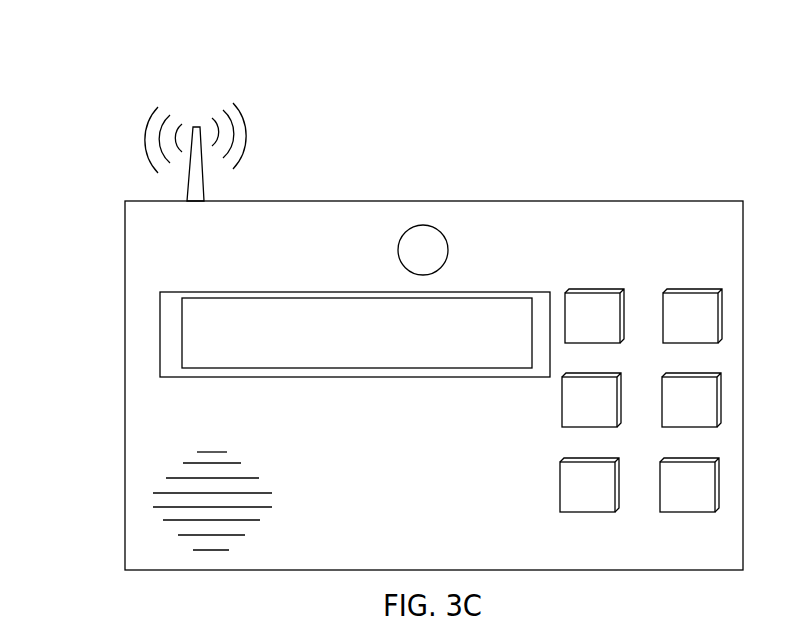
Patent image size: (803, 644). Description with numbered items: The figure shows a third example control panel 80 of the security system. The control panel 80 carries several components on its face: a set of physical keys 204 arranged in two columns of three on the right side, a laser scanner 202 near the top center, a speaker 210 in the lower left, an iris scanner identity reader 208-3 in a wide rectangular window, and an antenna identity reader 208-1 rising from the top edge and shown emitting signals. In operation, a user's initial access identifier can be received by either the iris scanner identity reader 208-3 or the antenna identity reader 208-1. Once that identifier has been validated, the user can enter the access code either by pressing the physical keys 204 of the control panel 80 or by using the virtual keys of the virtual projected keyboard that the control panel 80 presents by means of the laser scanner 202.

The control panel 80 is at (734, 558).
The antenna identity reader 208-1 is at (198, 127).
The laser scanner 202 is at (441, 233).
The iris scanner identity reader 208-3 is at (355, 334).
The physical keys 204 is at (624, 293).
The speaker 210 is at (173, 470).